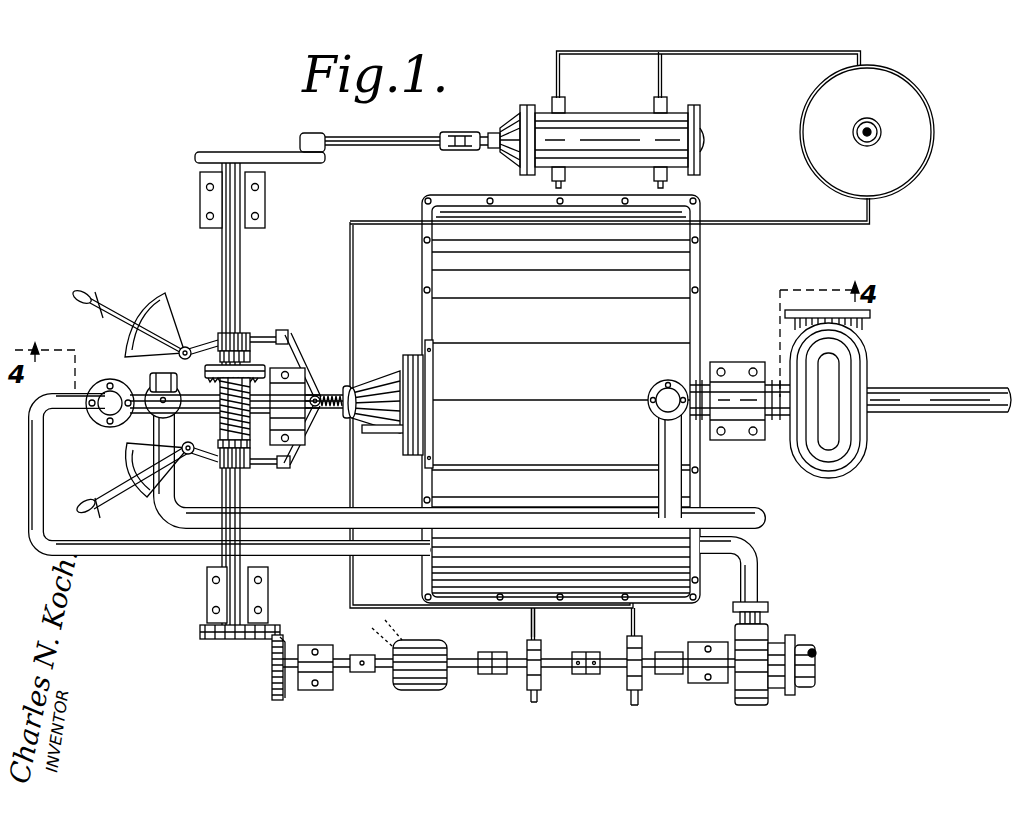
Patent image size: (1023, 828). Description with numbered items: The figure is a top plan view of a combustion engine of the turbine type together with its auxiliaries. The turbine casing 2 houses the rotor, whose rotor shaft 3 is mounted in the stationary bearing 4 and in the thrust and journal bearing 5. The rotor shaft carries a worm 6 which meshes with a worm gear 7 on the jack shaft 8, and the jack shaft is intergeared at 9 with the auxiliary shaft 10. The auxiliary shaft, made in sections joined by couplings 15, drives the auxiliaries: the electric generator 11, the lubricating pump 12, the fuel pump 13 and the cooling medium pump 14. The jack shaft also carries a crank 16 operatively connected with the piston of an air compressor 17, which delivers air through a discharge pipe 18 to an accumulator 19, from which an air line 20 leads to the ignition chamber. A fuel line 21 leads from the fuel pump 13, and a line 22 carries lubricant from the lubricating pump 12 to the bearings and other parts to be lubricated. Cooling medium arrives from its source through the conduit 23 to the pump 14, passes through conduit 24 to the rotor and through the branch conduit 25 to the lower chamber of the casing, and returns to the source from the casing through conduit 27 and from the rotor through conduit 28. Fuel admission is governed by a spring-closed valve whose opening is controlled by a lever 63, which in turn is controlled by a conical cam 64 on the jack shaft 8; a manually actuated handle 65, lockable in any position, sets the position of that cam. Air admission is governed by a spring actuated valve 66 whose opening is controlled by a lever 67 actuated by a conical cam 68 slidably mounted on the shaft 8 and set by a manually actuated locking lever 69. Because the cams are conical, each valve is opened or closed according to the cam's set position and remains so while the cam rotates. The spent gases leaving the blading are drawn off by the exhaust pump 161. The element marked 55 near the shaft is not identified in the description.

The turbine casing 2 is at (561, 399).
The rotor shaft 3 is at (915, 393).
The stationary bearing 4 is at (287, 383).
The thrust and journal bearing 5 is at (730, 383).
The worm 6 is at (227, 413).
The worm gear 7 is at (208, 368).
The jack shaft 8 is at (224, 247).
The intergearing 9 is at (261, 667).
The auxiliary shaft 10 is at (467, 670).
The electric generator 11 is at (412, 678).
The lubricating pump 12 is at (530, 668).
The fuel pump 13 is at (637, 673).
The cooling medium pump 14 is at (757, 693).
The couplings 15 is at (587, 668).
The crank 16 is at (286, 163).
The air compressor 17 is at (625, 107).
The discharge pipe 18 is at (717, 53).
The accumulator 19 is at (867, 132).
The air line 20 is at (763, 224).
The fuel line 21 is at (351, 587).
The lubricant line 22 is at (531, 626).
The conduit 23 is at (803, 648).
The conduit 24 is at (133, 553).
The conduit 25 is at (410, 463).
The conduit 27 is at (665, 442).
The conduit 28 is at (560, 513).
The cone pulley 55 is at (365, 383).
The lever 63 is at (284, 458).
The conical cam 64 is at (247, 467).
The manually actuated handle 65 is at (120, 490).
The spring actuated valve 66 is at (340, 390).
The lever 67 is at (253, 338).
The conical cam 68 is at (218, 334).
The manually actuated locking lever 69 is at (112, 305).
The exhaust pump 161 is at (838, 387).